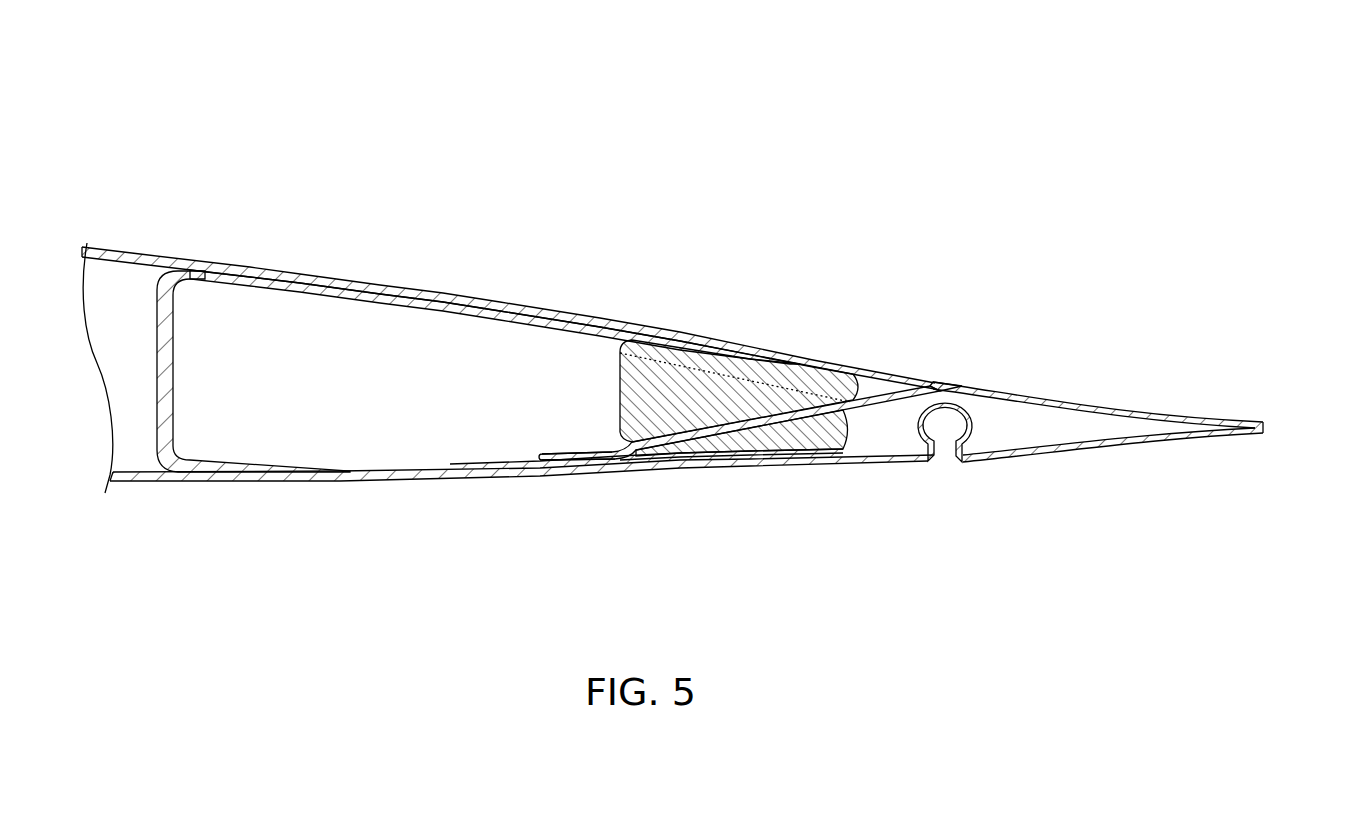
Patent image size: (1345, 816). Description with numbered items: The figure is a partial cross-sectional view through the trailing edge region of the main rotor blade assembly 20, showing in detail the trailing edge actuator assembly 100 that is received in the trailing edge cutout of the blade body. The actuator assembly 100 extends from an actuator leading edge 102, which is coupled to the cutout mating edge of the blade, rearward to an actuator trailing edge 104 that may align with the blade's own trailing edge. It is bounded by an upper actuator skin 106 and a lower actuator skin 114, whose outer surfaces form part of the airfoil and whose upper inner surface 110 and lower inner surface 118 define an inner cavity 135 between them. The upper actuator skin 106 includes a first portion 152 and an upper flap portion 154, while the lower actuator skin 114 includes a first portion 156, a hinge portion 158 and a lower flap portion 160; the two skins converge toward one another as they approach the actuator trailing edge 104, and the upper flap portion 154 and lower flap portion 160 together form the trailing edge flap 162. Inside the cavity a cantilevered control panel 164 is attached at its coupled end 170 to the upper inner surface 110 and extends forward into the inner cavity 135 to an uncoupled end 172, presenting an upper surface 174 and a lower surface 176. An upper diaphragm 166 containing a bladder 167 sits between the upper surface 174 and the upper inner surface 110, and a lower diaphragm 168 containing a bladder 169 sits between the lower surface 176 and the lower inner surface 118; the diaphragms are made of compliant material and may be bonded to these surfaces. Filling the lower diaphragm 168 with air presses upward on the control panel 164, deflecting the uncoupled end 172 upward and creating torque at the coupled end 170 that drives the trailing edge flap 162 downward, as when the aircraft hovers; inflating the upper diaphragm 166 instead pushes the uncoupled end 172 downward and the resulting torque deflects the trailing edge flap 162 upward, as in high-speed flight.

The main rotor blade assembly 20 is at (965, 130).
The trailing edge actuator assembly 100 is at (898, 224).
The actuator leading edge 102 is at (358, 505).
The actuator trailing edge 104 is at (1253, 452).
The upper actuator skin 106 is at (432, 292).
The upper inner surface 110 is at (503, 312).
The lower actuator skin 114 is at (337, 484).
The lower inner surface 118 is at (477, 468).
The inner cavity 135 is at (318, 332).
The first portion 152 is at (528, 278).
The upper flap portion 154 is at (1106, 398).
The first portion 156 is at (526, 536).
The hinge portion 158 is at (940, 482).
The lower flap portion 160 is at (1080, 473).
The trailing edge flap 162 is at (1140, 328).
The control panel 164 is at (783, 425).
The upper diaphragm 166 is at (705, 343).
The bladder 167 is at (768, 380).
The lower diaphragm 168 is at (655, 462).
The bladder 169 is at (697, 447).
The coupled end 170 is at (927, 386).
The uncoupled end 172 is at (626, 441).
The upper surface 174 is at (868, 393).
The lower surface 176 is at (842, 416).